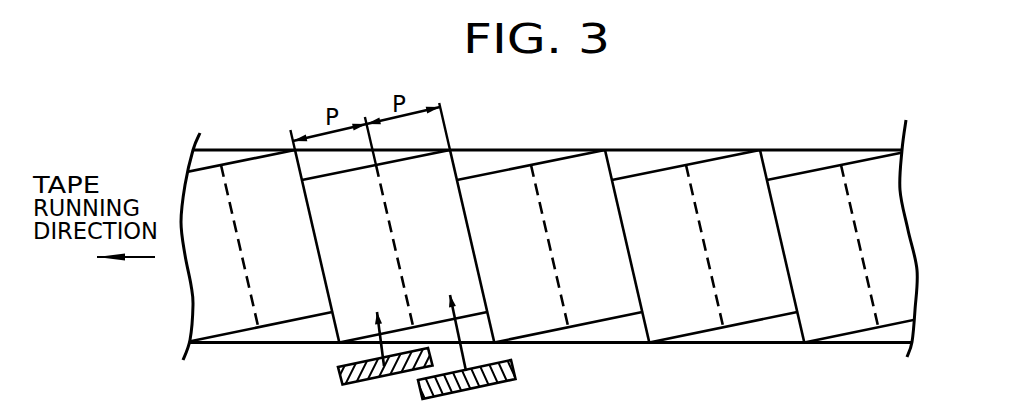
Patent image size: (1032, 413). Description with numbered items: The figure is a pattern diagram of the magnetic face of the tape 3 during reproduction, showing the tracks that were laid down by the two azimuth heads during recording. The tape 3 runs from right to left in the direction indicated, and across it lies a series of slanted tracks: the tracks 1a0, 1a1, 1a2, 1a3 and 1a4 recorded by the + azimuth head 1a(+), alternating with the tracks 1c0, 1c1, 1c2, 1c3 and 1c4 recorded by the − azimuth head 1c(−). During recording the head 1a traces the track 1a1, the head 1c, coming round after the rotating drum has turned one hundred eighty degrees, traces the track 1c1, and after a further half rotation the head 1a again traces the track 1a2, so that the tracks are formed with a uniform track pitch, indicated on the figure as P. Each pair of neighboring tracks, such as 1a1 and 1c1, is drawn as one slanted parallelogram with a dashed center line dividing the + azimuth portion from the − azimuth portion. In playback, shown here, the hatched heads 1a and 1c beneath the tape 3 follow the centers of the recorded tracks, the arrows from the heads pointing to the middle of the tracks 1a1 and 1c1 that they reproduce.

The magnetic tape 3 is at (818, 149).
The track recorded by head 1a (pair 0) 1a0 is at (239, 246).
The track recorded by head 1c (pair 0) 1c0 is at (296, 246).
The track 1a₁ 1a1 is at (394, 246).
The track 1c₁ 1c1 is at (452, 246).
The track 1a₂ 1a2 is at (549, 246).
The track recorded by head 1c (pair 2) 1c2 is at (607, 246).
The track recorded by head 1a (pair 3) 1a3 is at (704, 246).
The track recorded by head 1c (pair 3) 1c3 is at (762, 246).
The track recorded by head 1a (pair 4) 1a4 is at (859, 246).
The track recorded by head 1c (pair 4) 1c4 is at (880, 232).
The head 1a(+) 1a is at (338, 368).
The head 1c(−) 1c is at (512, 362).